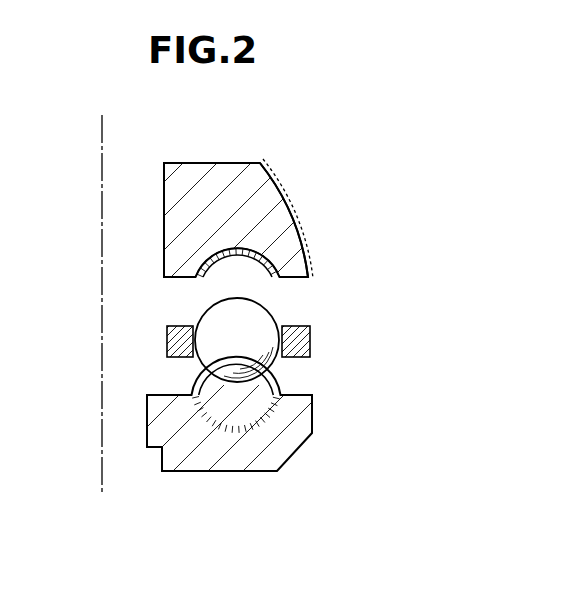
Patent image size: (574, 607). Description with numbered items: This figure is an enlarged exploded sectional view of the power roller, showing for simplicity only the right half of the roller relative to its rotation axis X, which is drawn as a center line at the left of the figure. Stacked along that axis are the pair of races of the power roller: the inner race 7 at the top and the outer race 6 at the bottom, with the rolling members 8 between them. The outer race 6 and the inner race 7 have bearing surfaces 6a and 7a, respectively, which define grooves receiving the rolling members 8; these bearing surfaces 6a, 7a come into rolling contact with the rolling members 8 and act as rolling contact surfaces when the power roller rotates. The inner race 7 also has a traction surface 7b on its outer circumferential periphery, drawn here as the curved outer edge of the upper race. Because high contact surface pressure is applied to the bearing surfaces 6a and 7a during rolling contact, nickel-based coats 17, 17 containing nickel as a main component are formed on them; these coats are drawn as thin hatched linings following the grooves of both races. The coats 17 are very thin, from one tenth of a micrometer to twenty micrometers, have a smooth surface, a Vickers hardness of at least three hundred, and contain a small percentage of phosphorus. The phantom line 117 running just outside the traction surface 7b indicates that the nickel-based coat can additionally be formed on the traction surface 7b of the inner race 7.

The rotation axis X is at (100, 296).
The outer race 6 is at (292, 433).
The bearing surface 6a is at (172, 437).
The inner race 7 is at (288, 246).
The bearing surface 7a is at (200, 266).
The traction surface 7b is at (283, 189).
The phantom line 117 is at (300, 215).
The rolling members 8 is at (275, 316).
The nickel-based coat 17 is at (256, 262).